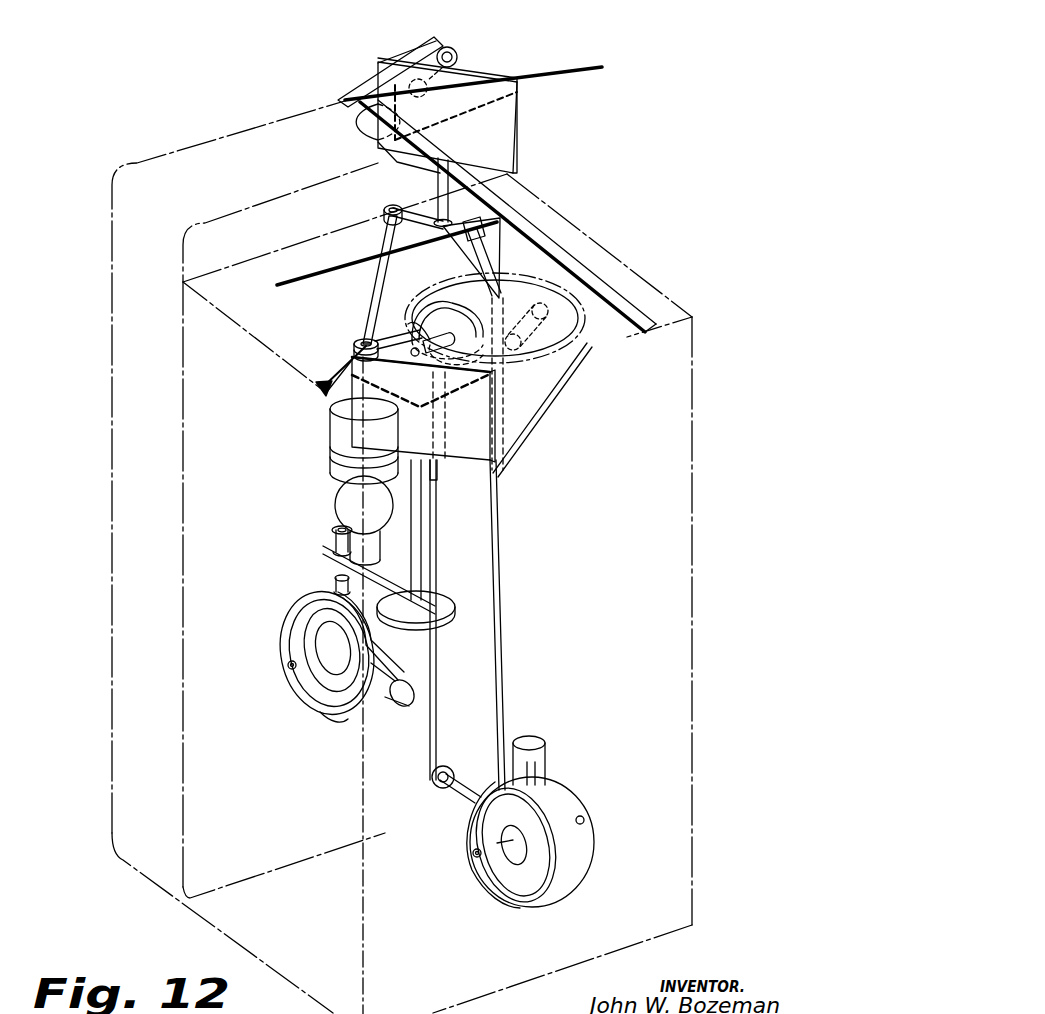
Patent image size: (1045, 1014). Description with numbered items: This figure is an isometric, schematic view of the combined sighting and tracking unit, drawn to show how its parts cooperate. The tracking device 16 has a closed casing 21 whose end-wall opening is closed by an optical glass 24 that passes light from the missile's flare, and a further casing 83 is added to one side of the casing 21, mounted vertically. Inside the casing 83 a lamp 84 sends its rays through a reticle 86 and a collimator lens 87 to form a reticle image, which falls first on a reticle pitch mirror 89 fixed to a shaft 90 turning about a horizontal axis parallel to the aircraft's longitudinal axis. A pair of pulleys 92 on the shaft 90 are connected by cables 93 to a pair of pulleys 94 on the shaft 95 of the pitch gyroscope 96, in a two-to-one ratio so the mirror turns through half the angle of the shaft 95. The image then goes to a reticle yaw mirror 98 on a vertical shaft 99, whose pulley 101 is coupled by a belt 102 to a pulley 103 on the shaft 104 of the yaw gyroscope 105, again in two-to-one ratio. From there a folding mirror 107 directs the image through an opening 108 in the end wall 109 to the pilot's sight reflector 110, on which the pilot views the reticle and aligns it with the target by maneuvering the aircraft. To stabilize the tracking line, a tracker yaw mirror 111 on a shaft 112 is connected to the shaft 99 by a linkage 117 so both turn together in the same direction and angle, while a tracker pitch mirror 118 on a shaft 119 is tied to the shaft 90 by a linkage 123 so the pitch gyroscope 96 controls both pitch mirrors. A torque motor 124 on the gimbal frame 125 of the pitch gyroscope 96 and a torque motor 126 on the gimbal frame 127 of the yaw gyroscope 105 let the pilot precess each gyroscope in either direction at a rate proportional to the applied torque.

The tracking device 16 is at (106, 273).
The casing 21 is at (140, 238).
The optical glass 24 is at (362, 112).
The casing 83 is at (692, 430).
The lamp 84 is at (345, 496).
The reticle 86 is at (333, 463).
The collimator lens 87 is at (341, 434).
The reticle pitch mirror 89 is at (324, 380).
The shaft 90 is at (423, 326).
The pulleys 92 is at (452, 309).
The cables 93 is at (499, 678).
The pulleys 94 is at (479, 792).
The shaft 95 is at (462, 789).
The pitch gyroscope 96 is at (588, 818).
The reticle yaw mirror 98 is at (444, 462).
The shaft 99 is at (413, 546).
The pulley 101 is at (444, 605).
The belt 102 is at (405, 585).
The pulley 103 is at (334, 549).
The shaft 104 is at (335, 582).
The yaw gyroscope 105 is at (282, 650).
The folding mirror 107 is at (543, 387).
The opening 108 is at (566, 303).
The end wall 109 is at (275, 333).
The pilot's sight reflector 110 is at (543, 238).
The tracker yaw mirror 111 is at (505, 137).
The shaft 112 is at (445, 188).
The linkage 117 is at (383, 281).
The tracker pitch mirror 118 is at (438, 42).
The shaft 119 is at (452, 64).
The linkage 123 is at (487, 258).
The torque motor 124 is at (538, 744).
The gimbal frame 125 is at (556, 800).
The torque motor 126 is at (402, 703).
The gimbal frame 127 is at (347, 723).